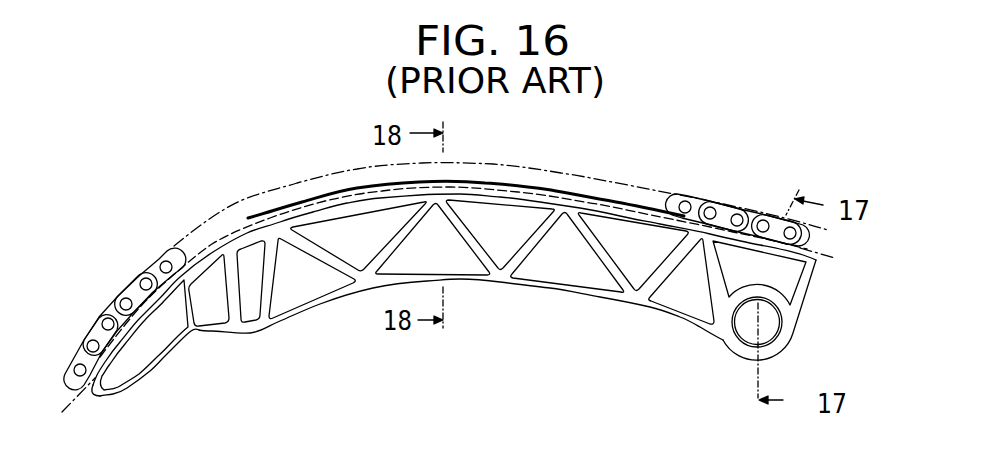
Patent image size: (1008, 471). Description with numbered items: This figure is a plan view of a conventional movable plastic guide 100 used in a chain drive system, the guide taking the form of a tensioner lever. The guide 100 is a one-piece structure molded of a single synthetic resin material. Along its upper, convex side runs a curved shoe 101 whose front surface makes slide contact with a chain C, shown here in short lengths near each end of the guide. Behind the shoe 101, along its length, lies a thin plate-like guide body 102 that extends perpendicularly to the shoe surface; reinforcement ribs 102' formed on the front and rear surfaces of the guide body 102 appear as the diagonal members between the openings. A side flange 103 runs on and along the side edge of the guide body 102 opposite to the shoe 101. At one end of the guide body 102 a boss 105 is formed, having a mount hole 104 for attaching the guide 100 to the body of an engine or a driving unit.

The movable plastic guide 100 is at (465, 265).
The shoe 101 is at (609, 210).
The guide body 102 is at (670, 302).
The reinforcement ribs 102' is at (471, 196).
The side flange 103 is at (312, 308).
The mount hole 104 is at (747, 330).
The boss 105 is at (787, 342).
The chain C is at (132, 283).